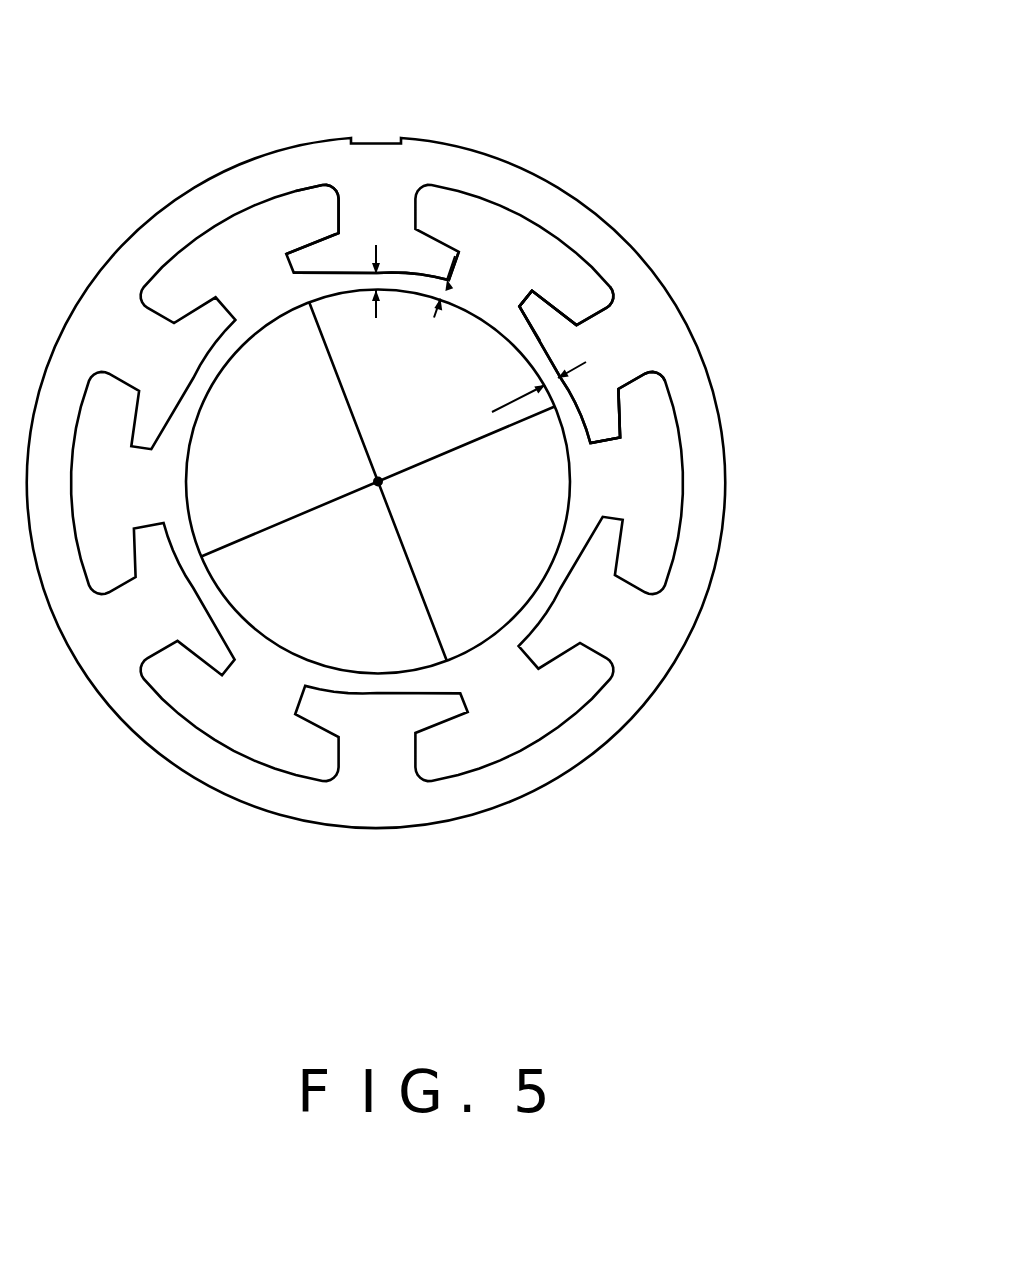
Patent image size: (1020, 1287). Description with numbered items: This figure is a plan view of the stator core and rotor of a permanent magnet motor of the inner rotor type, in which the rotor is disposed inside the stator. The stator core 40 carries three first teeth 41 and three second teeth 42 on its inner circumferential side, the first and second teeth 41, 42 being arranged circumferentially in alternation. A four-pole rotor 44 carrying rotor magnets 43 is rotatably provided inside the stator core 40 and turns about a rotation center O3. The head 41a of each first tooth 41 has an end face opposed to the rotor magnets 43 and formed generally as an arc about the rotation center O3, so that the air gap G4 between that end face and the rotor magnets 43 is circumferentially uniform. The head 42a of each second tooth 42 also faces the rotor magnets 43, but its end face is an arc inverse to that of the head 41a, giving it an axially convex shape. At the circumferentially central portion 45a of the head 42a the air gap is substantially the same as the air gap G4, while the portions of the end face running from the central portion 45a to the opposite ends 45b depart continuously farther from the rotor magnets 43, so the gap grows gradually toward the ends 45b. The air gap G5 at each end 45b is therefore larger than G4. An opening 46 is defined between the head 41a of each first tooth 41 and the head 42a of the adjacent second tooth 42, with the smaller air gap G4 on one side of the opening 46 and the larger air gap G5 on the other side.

The stator core 40 is at (697, 314).
The first tooth 41 is at (598, 281).
The head of first tooth 41a is at (602, 410).
The second tooth 42 is at (314, 207).
The head of second tooth 42a is at (452, 262).
The rotor magnets 43 is at (545, 477).
The rotor 44 is at (580, 500).
The central portion of second tooth head end face 45a is at (398, 270).
The ends of second tooth head end face 45b is at (286, 252).
The opening 46 is at (499, 285).
The air gap G4 is at (375, 318).
The air gap G5 is at (454, 278).
The rotation center O3 is at (374, 492).